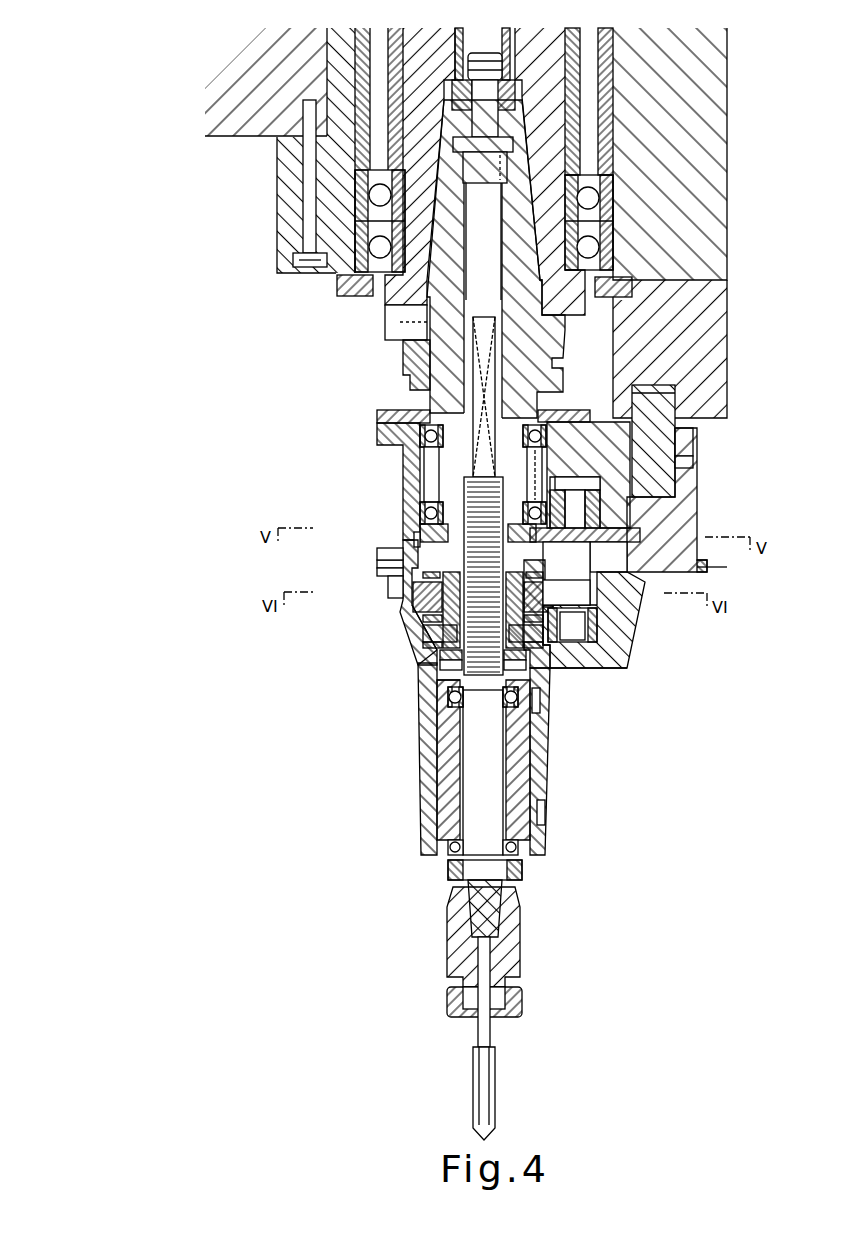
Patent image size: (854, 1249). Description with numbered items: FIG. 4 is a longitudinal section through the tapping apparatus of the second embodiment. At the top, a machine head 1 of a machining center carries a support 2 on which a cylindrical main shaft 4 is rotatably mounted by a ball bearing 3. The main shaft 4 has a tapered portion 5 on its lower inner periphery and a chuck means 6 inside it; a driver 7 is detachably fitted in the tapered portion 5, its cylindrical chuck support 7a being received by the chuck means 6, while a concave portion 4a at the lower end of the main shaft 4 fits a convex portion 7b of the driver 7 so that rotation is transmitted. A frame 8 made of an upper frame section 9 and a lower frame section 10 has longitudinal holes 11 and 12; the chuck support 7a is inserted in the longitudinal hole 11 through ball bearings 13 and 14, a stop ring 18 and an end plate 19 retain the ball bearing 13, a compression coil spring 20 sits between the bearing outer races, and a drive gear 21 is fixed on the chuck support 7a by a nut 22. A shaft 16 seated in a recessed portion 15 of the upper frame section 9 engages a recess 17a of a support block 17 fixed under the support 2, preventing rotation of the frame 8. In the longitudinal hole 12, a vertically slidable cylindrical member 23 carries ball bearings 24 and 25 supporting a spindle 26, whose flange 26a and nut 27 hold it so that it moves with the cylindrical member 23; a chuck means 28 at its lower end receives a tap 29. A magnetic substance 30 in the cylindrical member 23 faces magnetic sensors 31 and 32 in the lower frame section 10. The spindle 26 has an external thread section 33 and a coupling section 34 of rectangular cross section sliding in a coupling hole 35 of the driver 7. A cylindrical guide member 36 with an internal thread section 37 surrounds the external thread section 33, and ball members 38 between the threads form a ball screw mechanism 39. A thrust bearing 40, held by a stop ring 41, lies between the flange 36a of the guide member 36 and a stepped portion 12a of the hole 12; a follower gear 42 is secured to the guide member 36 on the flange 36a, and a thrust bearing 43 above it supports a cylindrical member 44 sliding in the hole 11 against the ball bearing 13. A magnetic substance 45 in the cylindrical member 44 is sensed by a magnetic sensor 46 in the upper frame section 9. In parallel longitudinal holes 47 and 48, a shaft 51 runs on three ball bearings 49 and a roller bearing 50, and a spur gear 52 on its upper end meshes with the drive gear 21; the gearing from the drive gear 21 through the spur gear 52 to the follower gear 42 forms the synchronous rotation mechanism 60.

The machine head 1 is at (212, 137).
The support 2 is at (277, 258).
The ball bearing 3 is at (613, 188).
The main shaft 4 is at (540, 45).
The concave portion 4a is at (385, 313).
The tapered portion 5 is at (540, 297).
The chuck means 6 is at (452, 88).
The driver 7 is at (403, 378).
The chuck support 7a is at (486, 58).
The convex portion 7b is at (413, 337).
The frame 8 is at (712, 563).
The upper frame section 9 is at (697, 505).
The lower frame section 10 is at (620, 660).
The longitudinal hole 11 is at (432, 476).
The longitudinal hole 12 is at (410, 598).
The intermediate stepped portion 12a is at (452, 633).
The ball bearing 13 is at (400, 443).
The ball bearing 14 is at (430, 522).
The recessed portion 15 is at (693, 462).
The shaft 16 is at (655, 392).
The support block 17 is at (727, 337).
The recess 17a is at (693, 438).
The stop ring 18 is at (432, 460).
The end plate 19 is at (385, 412).
The compression coil spring 20 is at (433, 506).
The drive gear 21 is at (430, 538).
The nut 22 is at (425, 574).
The cylindrical member 23 is at (548, 790).
The ball bearing 24 is at (545, 738).
The ball bearing 25 is at (522, 856).
The spindle 26 is at (497, 752).
The flange 26a is at (450, 735).
The nut 27 is at (520, 878).
The chuck means 28 is at (522, 960).
The tap 29 is at (496, 1072).
The magnetic substance 30 is at (527, 725).
The magnetic sensor 31 is at (540, 700).
The magnetic sensor 32 is at (545, 815).
The external thread section 33 is at (632, 578).
The coupling section 34 is at (483, 320).
The coupling hole 35 is at (490, 412).
The guide member 36 is at (425, 610).
The outer peripheral flange 36a is at (430, 640).
The internal thread section 37 is at (452, 650).
The ball members 38 is at (430, 635).
The ball screw mechanism 39 is at (462, 715).
The thrust bearing 40 is at (450, 655).
The stop ring 41 is at (450, 665).
The follower gear 42 is at (425, 643).
The thrust bearing 43 is at (425, 616).
The cylindrical member 44 is at (405, 549).
The magnetic substance 45 is at (405, 570).
The seal 46 is at (405, 562).
The longitudinal hole 47 is at (565, 478).
The longitudinal hole 48 is at (600, 668).
The ball bearings 49 is at (600, 522).
The roller bearing 50 is at (625, 637).
The shaft 51 is at (572, 645).
The spur gear 52 is at (565, 548).
The synchronous rotation mechanism 60 is at (612, 594).